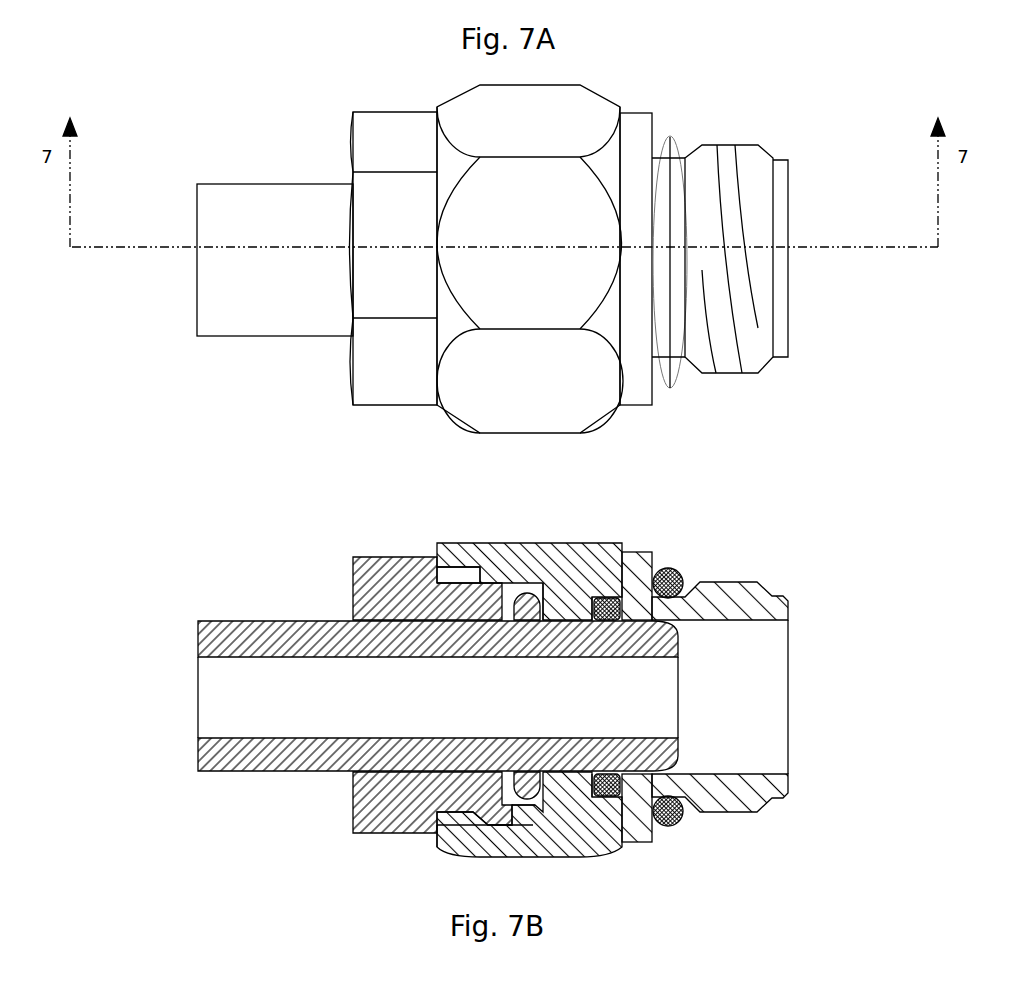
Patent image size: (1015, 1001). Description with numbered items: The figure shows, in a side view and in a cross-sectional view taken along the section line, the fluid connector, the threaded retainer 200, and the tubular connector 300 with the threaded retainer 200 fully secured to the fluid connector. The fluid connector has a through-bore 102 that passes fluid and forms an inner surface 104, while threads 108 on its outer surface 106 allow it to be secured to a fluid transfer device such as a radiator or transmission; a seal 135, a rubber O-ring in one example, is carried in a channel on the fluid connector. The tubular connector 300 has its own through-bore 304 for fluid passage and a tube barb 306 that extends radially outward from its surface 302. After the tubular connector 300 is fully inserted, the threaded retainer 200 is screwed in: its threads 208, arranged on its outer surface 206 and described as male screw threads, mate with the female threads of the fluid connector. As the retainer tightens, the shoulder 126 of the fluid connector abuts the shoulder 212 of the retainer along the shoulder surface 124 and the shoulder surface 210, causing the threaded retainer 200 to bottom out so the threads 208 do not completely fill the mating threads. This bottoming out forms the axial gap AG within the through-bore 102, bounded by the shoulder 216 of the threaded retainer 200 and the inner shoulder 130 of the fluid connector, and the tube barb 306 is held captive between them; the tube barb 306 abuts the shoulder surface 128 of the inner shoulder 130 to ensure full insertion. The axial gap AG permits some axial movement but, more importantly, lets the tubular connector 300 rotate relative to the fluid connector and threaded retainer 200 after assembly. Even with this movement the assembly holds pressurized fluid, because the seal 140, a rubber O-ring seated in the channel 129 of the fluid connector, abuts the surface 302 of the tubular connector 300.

In FIG. 7A, the tubular connector 300 is at (194, 294).
In FIG. 7B, the tubular connector 300 is at (195, 612).
In FIG. 7A, the threaded retainer 200 is at (349, 349).
In FIG. 7B, the threaded retainer 200 is at (386, 645).
In FIG. 7B, the shoulder surface 210 is at (426, 562).
In FIG. 7B, the shoulder 212 is at (426, 561).
In FIG. 7B, the tube barb 306 is at (470, 573).
In FIG. 7B, the threads 208 is at (508, 588).
In FIG. 7A, the outer surface 206 is at (544, 259).
In FIG. 7B, the outer surface 206 is at (492, 556).
In FIG. 7B, the surface 302 is at (545, 592).
In FIG. 7B, the channel 129 is at (580, 606).
In FIG. 7B, the seal 140 is at (605, 590).
In FIG. 7A, the seal 135 is at (671, 378).
In FIG. 7B, the seal 135 is at (675, 562).
In FIG. 7A, the outer surface 106 is at (713, 352).
In FIG. 7B, the outer surface 106 is at (742, 572).
In FIG. 7A, the threads 108 is at (738, 346).
In FIG. 7B, the through-bore 304 is at (688, 690).
In FIG. 7B, the through-bore 102 is at (800, 737).
In FIG. 7B, the inner surface 104 is at (782, 763).
In FIG. 7B, the shoulder 126 is at (428, 839).
In FIG. 7B, the shoulder surface 124 is at (432, 838).
In FIG. 7B, the axial gap AG is at (528, 829).
In FIG. 7B, the shoulder 216 is at (540, 834).
In FIG. 7B, the inner shoulder 130 is at (542, 821).
In FIG. 7B, the shoulder surface 128 is at (545, 807).